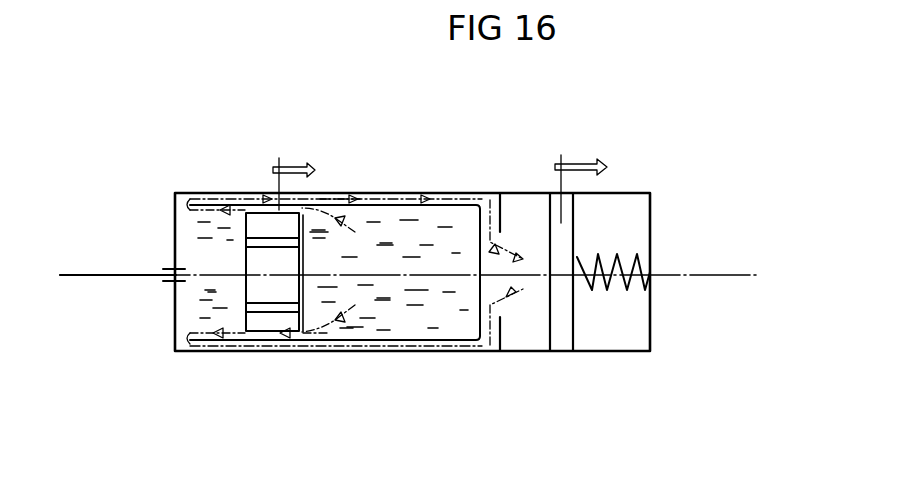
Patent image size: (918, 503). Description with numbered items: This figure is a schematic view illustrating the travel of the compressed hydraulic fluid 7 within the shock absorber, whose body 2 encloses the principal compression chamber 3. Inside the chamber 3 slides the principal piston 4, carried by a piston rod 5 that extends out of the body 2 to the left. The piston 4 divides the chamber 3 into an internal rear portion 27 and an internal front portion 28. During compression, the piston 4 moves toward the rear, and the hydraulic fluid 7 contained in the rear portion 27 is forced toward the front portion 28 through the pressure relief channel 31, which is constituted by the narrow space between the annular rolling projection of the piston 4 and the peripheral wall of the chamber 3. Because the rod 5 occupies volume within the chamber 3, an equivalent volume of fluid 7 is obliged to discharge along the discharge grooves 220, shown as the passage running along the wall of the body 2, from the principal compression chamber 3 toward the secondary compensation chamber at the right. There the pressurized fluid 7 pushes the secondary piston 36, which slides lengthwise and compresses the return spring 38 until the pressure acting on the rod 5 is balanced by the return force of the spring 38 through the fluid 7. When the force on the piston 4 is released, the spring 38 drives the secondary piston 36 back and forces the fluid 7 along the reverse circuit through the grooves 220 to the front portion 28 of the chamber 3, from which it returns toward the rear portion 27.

The body 2 is at (333, 355).
The principal compression chamber 3 is at (366, 356).
The principal piston 4 is at (272, 308).
The piston rod 5 is at (107, 283).
The hydraulic fluid 7 is at (408, 321).
The internal rear portion 27 is at (438, 313).
The internal front portion 28 is at (202, 306).
The pressure relief channel 31 is at (261, 206).
The secondary piston 36 is at (563, 317).
The spring 38 is at (605, 287).
The discharge grooves 220 is at (337, 200).